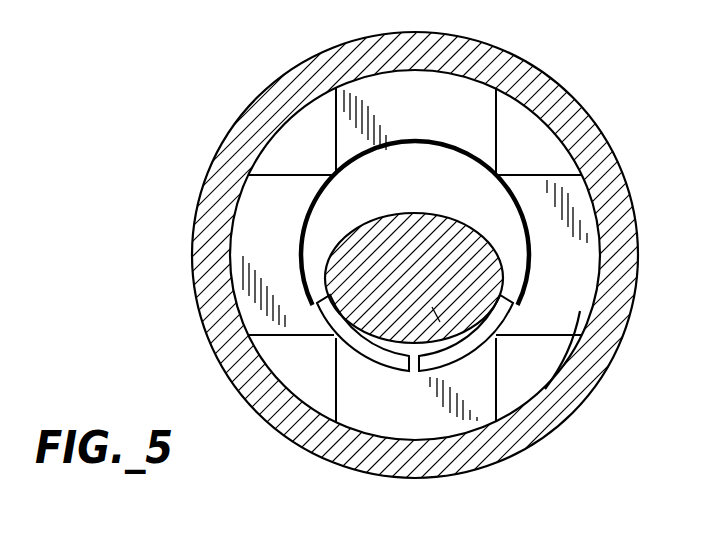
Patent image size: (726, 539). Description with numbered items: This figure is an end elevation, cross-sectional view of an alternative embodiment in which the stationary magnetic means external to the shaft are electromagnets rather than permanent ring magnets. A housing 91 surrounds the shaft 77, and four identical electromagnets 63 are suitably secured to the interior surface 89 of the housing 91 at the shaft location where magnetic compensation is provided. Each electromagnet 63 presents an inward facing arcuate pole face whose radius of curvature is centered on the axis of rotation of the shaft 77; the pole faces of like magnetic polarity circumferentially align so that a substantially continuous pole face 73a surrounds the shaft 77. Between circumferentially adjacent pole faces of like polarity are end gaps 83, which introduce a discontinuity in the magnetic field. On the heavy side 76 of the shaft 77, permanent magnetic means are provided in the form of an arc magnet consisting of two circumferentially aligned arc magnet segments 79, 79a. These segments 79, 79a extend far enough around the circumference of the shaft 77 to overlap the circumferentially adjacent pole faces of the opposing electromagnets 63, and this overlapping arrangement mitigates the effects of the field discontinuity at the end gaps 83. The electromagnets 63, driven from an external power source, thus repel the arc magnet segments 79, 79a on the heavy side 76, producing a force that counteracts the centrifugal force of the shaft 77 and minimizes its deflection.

The electromagnet 63 is at (498, 117).
The continuous pole face 73a is at (311, 218).
The heavy side 76 is at (432, 307).
The shaft 77 is at (426, 222).
The arc magnet segment 79 is at (334, 338).
The arc magnet segment 79a is at (500, 340).
The end gap 83 is at (337, 172).
The interior surface 89 is at (565, 340).
The housing 91 is at (617, 319).